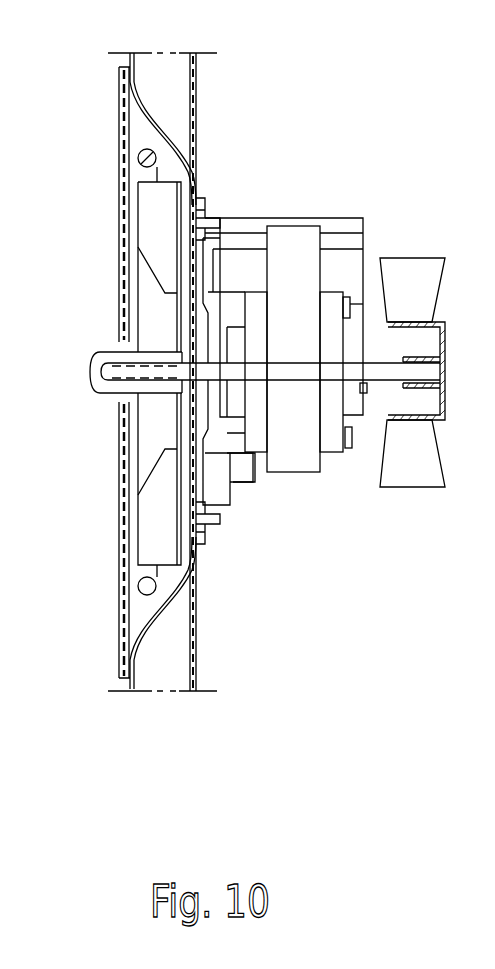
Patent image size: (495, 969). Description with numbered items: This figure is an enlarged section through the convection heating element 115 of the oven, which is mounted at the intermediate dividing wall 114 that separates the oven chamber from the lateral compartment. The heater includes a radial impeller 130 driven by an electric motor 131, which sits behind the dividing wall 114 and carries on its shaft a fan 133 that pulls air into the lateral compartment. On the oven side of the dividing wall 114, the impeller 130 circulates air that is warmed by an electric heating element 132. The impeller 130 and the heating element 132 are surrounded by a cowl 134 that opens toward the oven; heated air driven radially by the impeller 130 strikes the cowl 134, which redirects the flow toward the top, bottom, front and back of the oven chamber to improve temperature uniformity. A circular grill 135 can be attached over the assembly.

The intermediate dividing wall 114 is at (198, 78).
The convection heating element 115 is at (215, 193).
The radial impeller 130 is at (162, 525).
The electric motor 131 is at (302, 217).
The electric heating element 132 is at (155, 151).
The fan 133 is at (427, 272).
The cowl 134 is at (194, 588).
The circular grill 135 is at (122, 642).